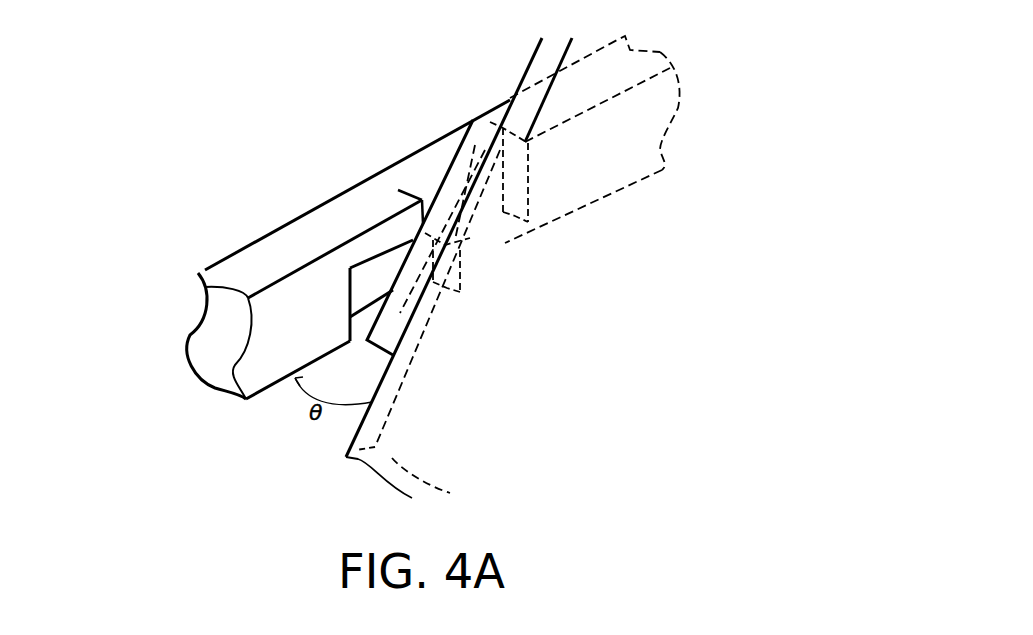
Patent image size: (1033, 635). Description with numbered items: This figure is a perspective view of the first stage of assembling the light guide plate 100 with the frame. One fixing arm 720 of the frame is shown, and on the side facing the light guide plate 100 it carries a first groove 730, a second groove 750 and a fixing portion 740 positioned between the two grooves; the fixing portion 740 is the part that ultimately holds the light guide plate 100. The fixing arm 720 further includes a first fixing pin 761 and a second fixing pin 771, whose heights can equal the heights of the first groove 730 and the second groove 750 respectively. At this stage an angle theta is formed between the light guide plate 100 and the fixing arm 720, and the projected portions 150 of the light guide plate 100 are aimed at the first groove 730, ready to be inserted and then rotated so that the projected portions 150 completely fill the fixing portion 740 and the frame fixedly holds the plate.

The projected portion 150 is at (448, 180).
The first groove 730 is at (423, 187).
The first fixing pin 761 is at (377, 241).
The fixing arm 720 is at (222, 318).
The second fixing pin 771 is at (508, 243).
The fixing portion 740 is at (437, 231).
The second groove 750 is at (397, 317).
The light guide plate 100 is at (408, 460).